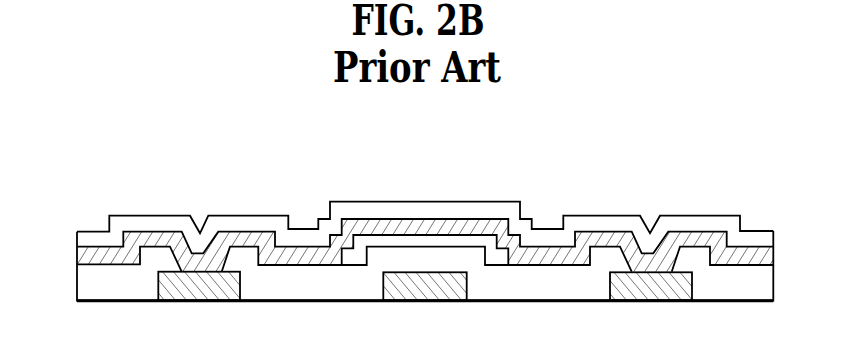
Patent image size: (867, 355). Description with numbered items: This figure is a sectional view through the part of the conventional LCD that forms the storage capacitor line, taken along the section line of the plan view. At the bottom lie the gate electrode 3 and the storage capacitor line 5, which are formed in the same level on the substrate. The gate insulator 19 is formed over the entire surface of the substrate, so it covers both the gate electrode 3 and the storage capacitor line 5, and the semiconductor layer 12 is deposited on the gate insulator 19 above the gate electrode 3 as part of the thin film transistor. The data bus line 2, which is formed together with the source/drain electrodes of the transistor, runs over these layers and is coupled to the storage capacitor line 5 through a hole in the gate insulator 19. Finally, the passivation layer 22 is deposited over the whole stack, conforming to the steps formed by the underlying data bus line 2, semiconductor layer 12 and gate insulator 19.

The data bus line 2 is at (153, 236).
The gate electrode 3 is at (438, 290).
The storage capacitor line 5 is at (220, 290).
The semiconductor layer 12 is at (468, 244).
The gate insulator 19 is at (322, 290).
The passivation layer 22 is at (393, 210).